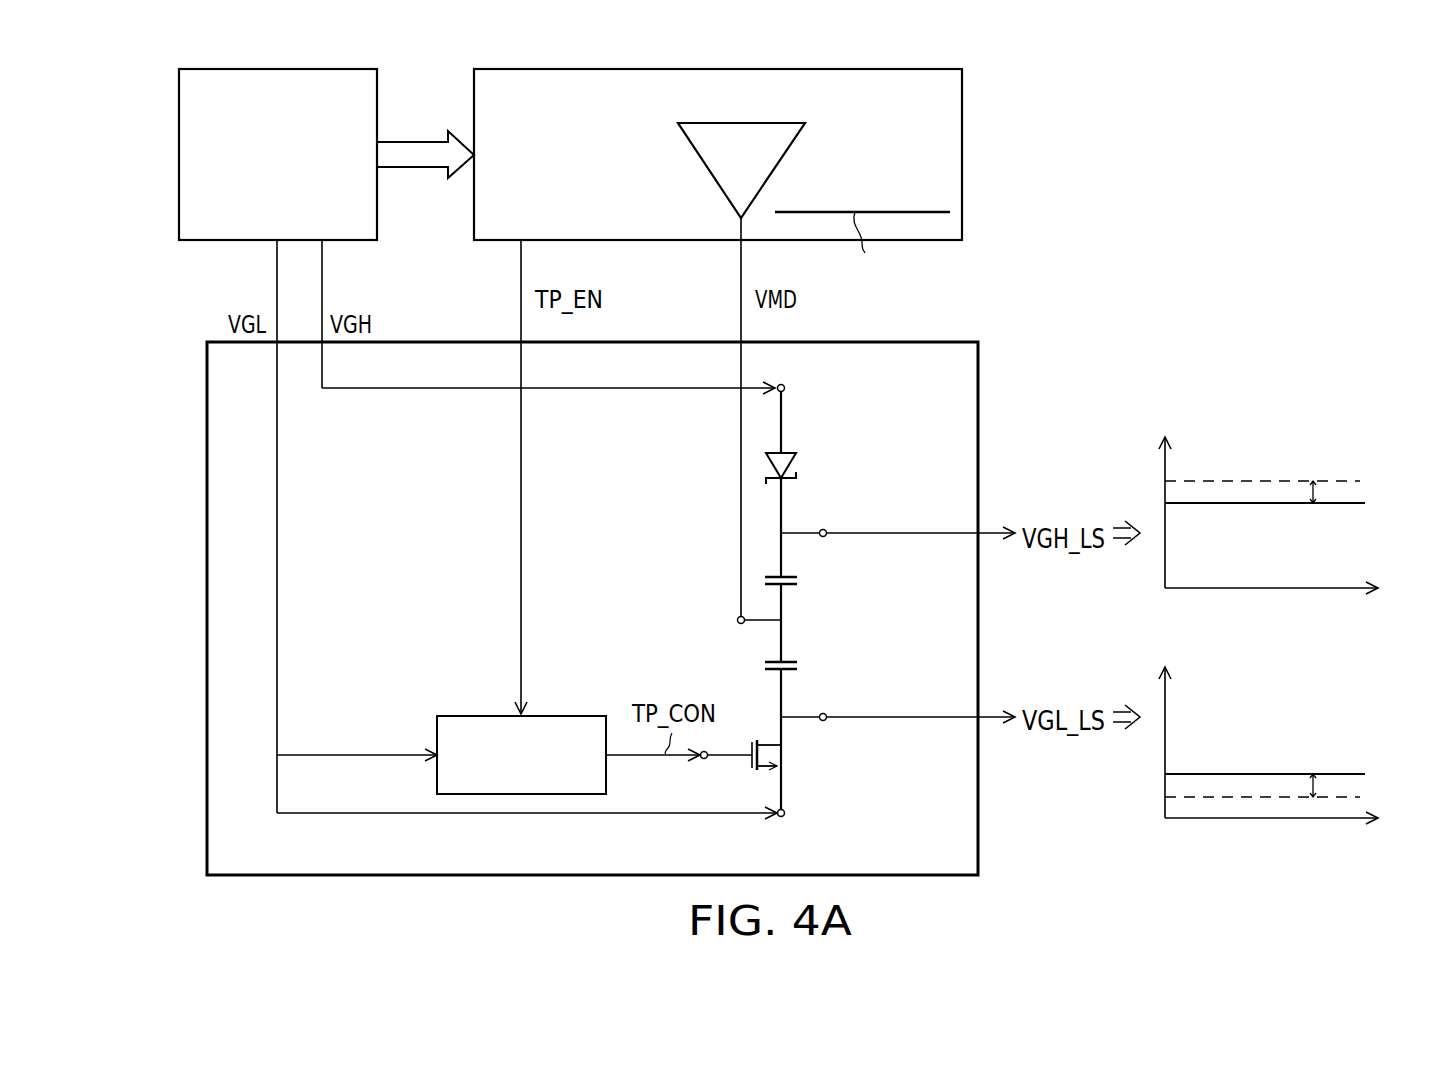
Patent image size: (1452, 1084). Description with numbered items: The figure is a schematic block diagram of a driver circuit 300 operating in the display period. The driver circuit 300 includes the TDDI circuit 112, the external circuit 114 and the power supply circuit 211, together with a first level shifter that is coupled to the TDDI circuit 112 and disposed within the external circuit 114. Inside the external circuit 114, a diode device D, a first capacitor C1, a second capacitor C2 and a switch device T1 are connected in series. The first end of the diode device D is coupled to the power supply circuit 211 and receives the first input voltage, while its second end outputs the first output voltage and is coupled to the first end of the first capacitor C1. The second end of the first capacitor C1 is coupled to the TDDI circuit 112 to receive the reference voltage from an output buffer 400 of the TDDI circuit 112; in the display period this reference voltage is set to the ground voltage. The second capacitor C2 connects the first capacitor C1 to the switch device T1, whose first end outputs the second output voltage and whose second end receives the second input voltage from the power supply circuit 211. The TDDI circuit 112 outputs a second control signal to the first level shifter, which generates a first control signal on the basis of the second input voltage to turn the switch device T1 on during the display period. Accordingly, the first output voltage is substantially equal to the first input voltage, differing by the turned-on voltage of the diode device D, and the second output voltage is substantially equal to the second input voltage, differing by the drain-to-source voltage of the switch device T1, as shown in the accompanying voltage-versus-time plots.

The power supply circuit 211 is at (178, 148).
The TDDI circuit 112 is at (962, 122).
The output buffer 400 is at (775, 172).
The external circuit 114 is at (207, 667).
The driver circuit 300 is at (1123, 878).
The diode device D is at (793, 468).
The first capacitor C1 is at (798, 582).
The second capacitor C2 is at (798, 667).
The switch device T1 is at (784, 758).